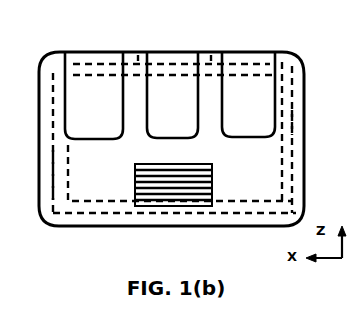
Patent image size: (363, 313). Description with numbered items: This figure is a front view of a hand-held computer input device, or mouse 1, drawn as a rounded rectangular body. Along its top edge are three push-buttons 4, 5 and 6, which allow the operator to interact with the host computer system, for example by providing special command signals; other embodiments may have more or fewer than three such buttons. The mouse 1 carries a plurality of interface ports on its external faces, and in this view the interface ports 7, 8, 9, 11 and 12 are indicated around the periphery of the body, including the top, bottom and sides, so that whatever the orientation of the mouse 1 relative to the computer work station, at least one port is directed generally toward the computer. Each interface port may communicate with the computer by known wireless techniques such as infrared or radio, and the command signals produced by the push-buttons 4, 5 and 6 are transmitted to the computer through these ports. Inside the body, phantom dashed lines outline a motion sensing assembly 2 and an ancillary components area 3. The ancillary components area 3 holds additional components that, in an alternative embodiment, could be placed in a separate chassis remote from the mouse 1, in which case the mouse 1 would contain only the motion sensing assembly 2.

The mouse 1 is at (310, 70).
The motion sensing assembly 2 is at (252, 63).
The ancillary components area 3 is at (226, 75).
The push-button 4 is at (106, 140).
The push-button 5 is at (203, 138).
The push-button 6 is at (241, 138).
The interface port 7 is at (140, 60).
The interface port 8 is at (205, 220).
The interface port 9 is at (135, 184).
The interface port 11 is at (296, 121).
The interface port 12 is at (45, 145).